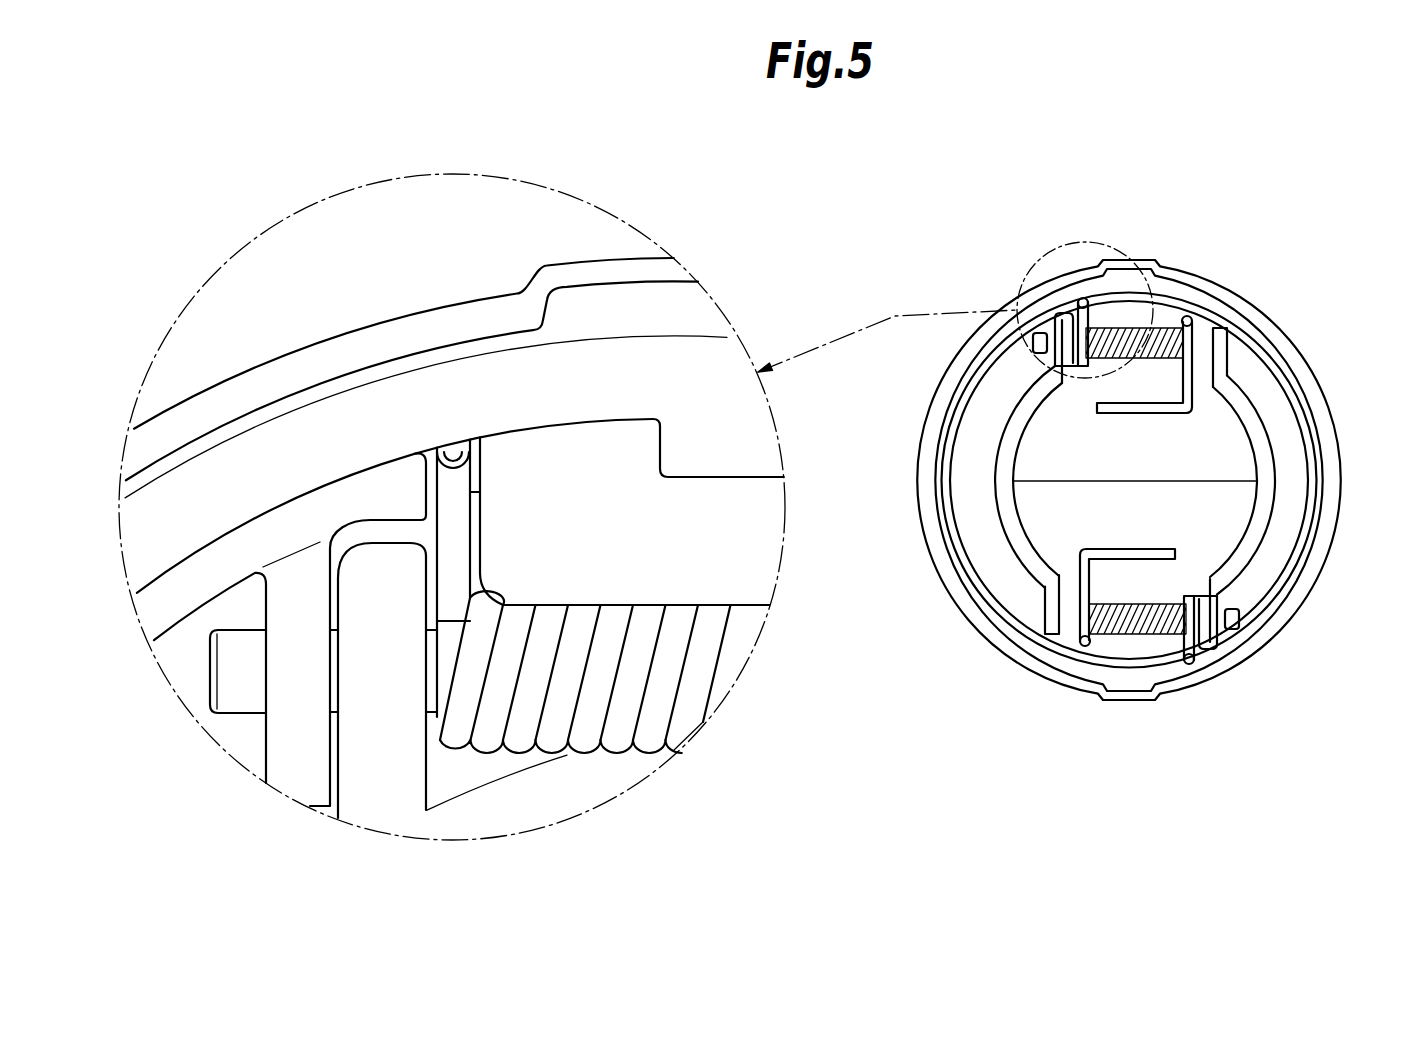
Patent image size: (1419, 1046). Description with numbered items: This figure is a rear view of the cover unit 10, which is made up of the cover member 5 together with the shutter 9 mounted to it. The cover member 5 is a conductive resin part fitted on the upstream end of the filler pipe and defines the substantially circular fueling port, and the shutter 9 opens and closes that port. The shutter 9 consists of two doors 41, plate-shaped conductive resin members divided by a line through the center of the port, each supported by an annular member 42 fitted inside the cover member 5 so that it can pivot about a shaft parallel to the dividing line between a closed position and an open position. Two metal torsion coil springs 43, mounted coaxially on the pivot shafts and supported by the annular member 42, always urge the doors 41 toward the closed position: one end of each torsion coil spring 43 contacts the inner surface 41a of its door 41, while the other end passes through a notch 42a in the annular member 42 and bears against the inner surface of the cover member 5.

The cover member 5 is at (698, 313).
The shutter 9 is at (1247, 410).
The cover unit 10 is at (588, 258).
The door 41 is at (553, 795).
The inner surface of door 41a is at (1035, 458).
The annular member 42 is at (748, 567).
The notch 42a is at (455, 452).
The torsion coil spring 43 is at (733, 648).